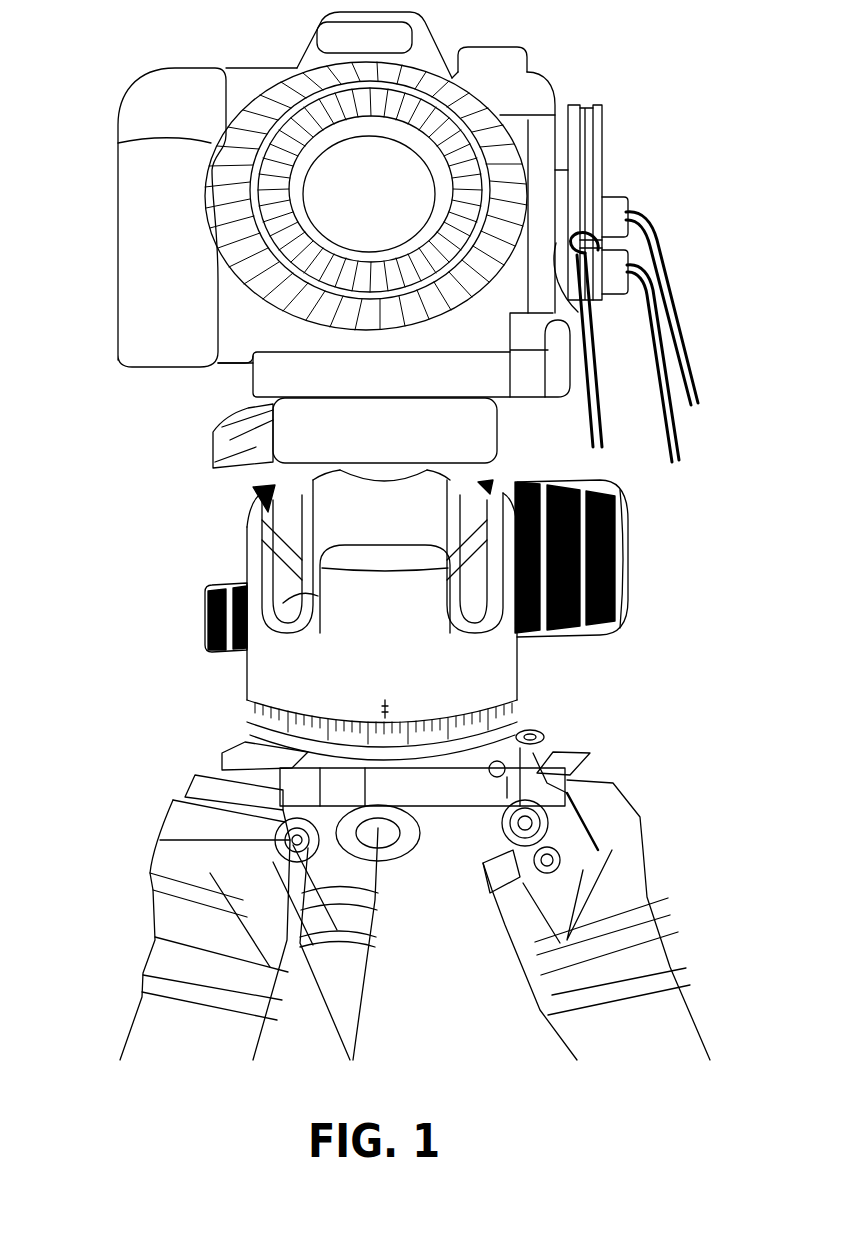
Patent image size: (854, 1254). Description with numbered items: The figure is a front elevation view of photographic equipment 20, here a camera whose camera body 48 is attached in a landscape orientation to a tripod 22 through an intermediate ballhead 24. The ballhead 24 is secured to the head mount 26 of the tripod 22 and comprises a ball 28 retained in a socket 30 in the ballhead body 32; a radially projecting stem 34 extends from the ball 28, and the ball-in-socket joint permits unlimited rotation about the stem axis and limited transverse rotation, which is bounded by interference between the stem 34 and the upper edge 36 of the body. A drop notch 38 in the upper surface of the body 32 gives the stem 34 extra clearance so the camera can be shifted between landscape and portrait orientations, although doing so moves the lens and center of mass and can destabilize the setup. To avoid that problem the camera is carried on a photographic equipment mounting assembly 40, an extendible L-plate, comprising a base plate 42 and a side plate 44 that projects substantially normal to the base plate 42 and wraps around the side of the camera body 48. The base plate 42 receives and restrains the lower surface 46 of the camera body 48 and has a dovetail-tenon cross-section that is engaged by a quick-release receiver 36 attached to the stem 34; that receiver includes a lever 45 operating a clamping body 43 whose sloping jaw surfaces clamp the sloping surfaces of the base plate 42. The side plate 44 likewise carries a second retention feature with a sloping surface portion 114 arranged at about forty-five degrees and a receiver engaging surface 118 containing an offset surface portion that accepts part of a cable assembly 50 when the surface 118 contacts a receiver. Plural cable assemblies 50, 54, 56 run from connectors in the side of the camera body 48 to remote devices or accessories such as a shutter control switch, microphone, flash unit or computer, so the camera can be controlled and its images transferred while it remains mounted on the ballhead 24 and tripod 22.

The photographic equipment 20 is at (108, 76).
The tripod 22 is at (697, 868).
The ballhead 24 is at (551, 680).
The head mount 26 is at (463, 806).
The ball 28 is at (363, 568).
The socket 30 is at (285, 490).
The ballhead body 32 is at (247, 673).
The stem 34 is at (340, 472).
The upper edge / receiver 36 is at (212, 426).
The drop notch 38 is at (297, 597).
The photographic equipment mounting assembly 40 is at (637, 163).
The base plate 42 is at (399, 374).
The clamping body 43 is at (497, 428).
The side plate 44 is at (603, 286).
The lever 45 is at (213, 456).
The lower surface 46 is at (240, 366).
The camera body 48 is at (118, 302).
The cable assembly 50 is at (596, 398).
The cable assembly 54 is at (680, 425).
The cable assembly 56 is at (690, 330).
The sloping surface portion 114 is at (585, 108).
The receiver engaging surface 118 is at (603, 120).